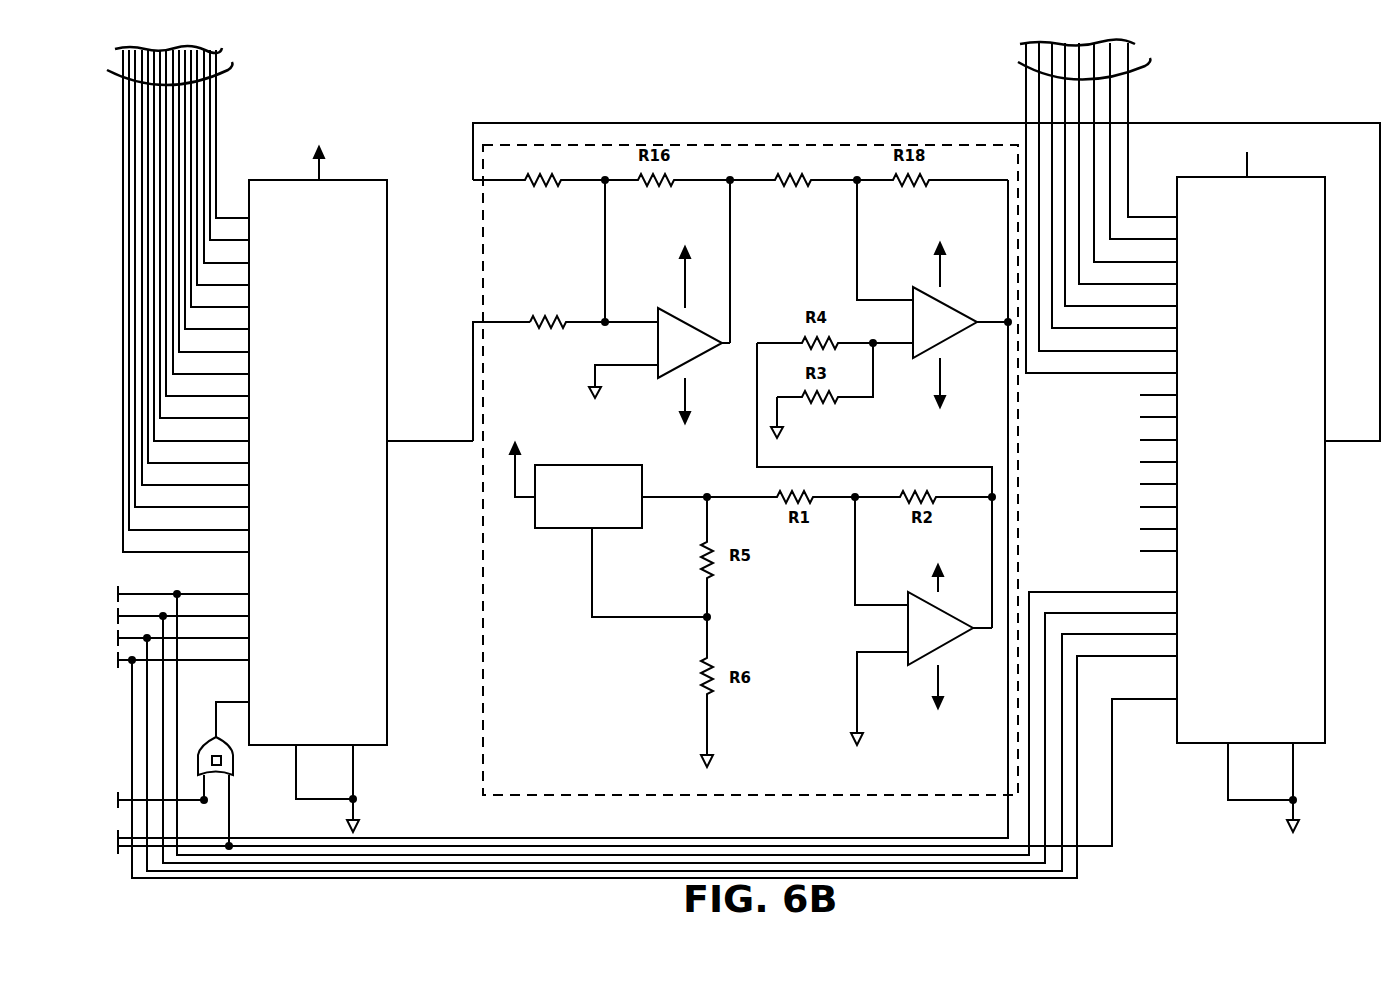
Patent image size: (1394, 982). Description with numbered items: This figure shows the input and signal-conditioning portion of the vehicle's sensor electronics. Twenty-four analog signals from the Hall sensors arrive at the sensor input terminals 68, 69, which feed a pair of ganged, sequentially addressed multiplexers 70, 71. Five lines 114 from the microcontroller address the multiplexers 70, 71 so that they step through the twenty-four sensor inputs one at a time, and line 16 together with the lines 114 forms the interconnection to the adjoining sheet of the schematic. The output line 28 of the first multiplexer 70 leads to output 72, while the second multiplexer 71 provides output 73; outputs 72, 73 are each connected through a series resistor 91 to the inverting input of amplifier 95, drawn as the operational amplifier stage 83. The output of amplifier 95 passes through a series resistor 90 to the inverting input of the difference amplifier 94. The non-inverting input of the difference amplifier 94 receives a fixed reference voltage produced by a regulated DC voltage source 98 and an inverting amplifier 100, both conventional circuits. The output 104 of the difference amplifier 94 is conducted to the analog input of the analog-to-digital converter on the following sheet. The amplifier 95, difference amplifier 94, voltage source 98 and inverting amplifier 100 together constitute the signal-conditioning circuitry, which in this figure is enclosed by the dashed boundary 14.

The signal processing circuit 14 is at (1017, 508).
The line 16 is at (1008, 815).
The multiplexer output line 28 is at (430, 429).
The sensor input terminal 68 is at (214, 116).
The sensor input terminal 69 is at (1132, 106).
The multiplexer 70 is at (387, 716).
The multiplexer 71 is at (1325, 683).
The output line 72 is at (452, 442).
The output 73 is at (473, 163).
The first operational amplifier 83 is at (658, 315).
The series resistor 90 is at (783, 186).
The series resistor 91 is at (548, 180).
The difference amplifier 94 is at (950, 302).
The amplifier 95 is at (709, 354).
The regulated DC voltage source 98 is at (548, 530).
The inverting amplifier 100 is at (957, 648).
The output of the difference amplifier 104 is at (985, 335).
The lines 114 is at (120, 808).